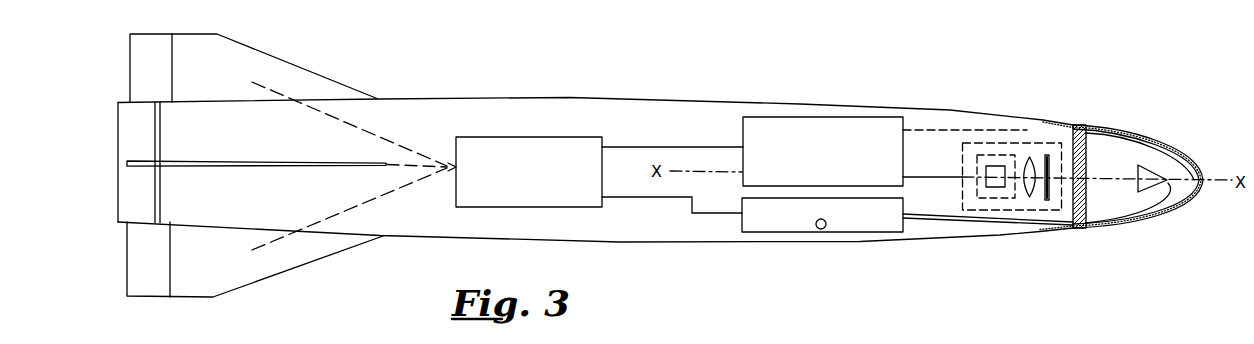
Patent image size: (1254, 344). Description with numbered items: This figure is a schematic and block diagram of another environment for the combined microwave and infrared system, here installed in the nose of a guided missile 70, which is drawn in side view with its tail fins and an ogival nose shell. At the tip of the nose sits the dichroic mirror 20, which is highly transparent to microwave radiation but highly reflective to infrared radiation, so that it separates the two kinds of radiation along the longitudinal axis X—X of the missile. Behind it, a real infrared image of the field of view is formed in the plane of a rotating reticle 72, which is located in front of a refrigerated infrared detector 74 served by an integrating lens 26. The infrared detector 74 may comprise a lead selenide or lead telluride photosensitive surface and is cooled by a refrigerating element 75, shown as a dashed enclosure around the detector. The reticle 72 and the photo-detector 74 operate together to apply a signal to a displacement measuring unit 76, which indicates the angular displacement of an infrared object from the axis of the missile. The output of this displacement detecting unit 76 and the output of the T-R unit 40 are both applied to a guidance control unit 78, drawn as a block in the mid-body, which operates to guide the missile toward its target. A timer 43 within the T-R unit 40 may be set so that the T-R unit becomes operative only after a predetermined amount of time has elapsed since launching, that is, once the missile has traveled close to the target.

The dichroic mirror 20 is at (1138, 168).
The integrating lens 26 is at (1028, 157).
The T-R unit 40 is at (742, 208).
The timer 43 is at (826, 225).
The guided missile 70 is at (678, 92).
The rotating reticle 72 is at (1048, 154).
The infrared detector 74 is at (985, 182).
The refrigerating element 75 is at (962, 160).
The displacement measuring unit 76 is at (743, 128).
The guidance control unit 78 is at (584, 137).